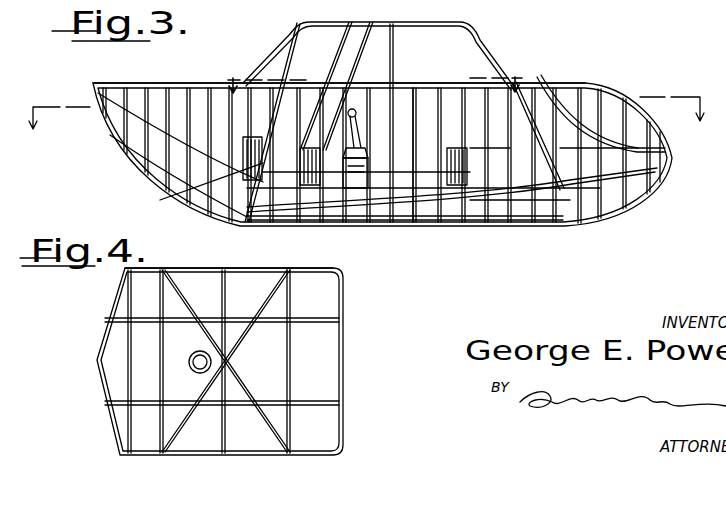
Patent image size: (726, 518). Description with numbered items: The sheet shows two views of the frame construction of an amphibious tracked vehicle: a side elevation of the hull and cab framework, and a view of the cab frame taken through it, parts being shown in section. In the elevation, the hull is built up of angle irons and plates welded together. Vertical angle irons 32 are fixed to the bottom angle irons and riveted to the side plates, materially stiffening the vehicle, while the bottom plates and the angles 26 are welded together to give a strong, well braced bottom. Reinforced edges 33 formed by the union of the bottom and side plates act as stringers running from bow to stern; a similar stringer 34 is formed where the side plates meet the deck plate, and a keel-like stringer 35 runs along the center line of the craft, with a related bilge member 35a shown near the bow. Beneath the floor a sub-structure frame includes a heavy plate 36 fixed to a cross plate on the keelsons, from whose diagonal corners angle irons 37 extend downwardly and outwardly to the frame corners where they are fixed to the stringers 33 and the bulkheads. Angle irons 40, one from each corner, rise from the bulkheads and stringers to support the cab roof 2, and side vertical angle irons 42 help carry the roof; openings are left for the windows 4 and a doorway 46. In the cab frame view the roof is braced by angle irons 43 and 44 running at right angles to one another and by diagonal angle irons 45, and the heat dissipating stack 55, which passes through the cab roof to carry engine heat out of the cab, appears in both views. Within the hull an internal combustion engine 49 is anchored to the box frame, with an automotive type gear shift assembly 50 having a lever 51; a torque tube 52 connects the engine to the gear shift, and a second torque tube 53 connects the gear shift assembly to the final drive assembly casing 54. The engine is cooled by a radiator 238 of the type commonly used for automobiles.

In FIG. 3, the cab roof 2 is at (365, 127).
In FIG. 3, the windows 4 is at (375, 101).
In FIG. 3, the angles 26 is at (453, 215).
In FIG. 3, the vertical angle irons 32 is at (420, 100).
In FIG. 3, the reinforced edges 33 is at (290, 222).
In FIG. 3, the stringer 34 is at (188, 84).
In FIG. 3, the keel-like stringer 35 is at (110, 136).
In FIG. 3, the bilge stringer 35a is at (588, 188).
In FIG. 3, the heavy plate 36 is at (395, 214).
In FIG. 3, the angle irons 37 is at (338, 212).
In FIG. 3, the angle irons 40 is at (292, 40).
In FIG. 4, the angle irons 40 is at (186, 258).
In FIG. 3, the side vertical angle irons 42 is at (410, 12).
In FIG. 4, the angle irons 43 is at (224, 334).
In FIG. 4, the angle irons 44 is at (317, 402).
In FIG. 4, the diagonal angle irons 45 is at (262, 274).
In FIG. 4, the doorway 46 is at (342, 330).
In FIG. 3, the internal combustion engine 49 is at (240, 214).
In FIG. 3, the gear shift assembly 50 is at (364, 186).
In FIG. 3, the lever 51 is at (358, 118).
In FIG. 3, the torque tube 52 is at (352, 109).
In FIG. 3, the torque tube 53 is at (404, 110).
In FIG. 3, the final drive assembly casing 54 is at (500, 182).
In FIG. 3, the heat dissipating stack 55 is at (362, 16).
In FIG. 4, the heat dissipating stack 55 is at (194, 354).
In FIG. 3, the radiator 238 is at (162, 196).